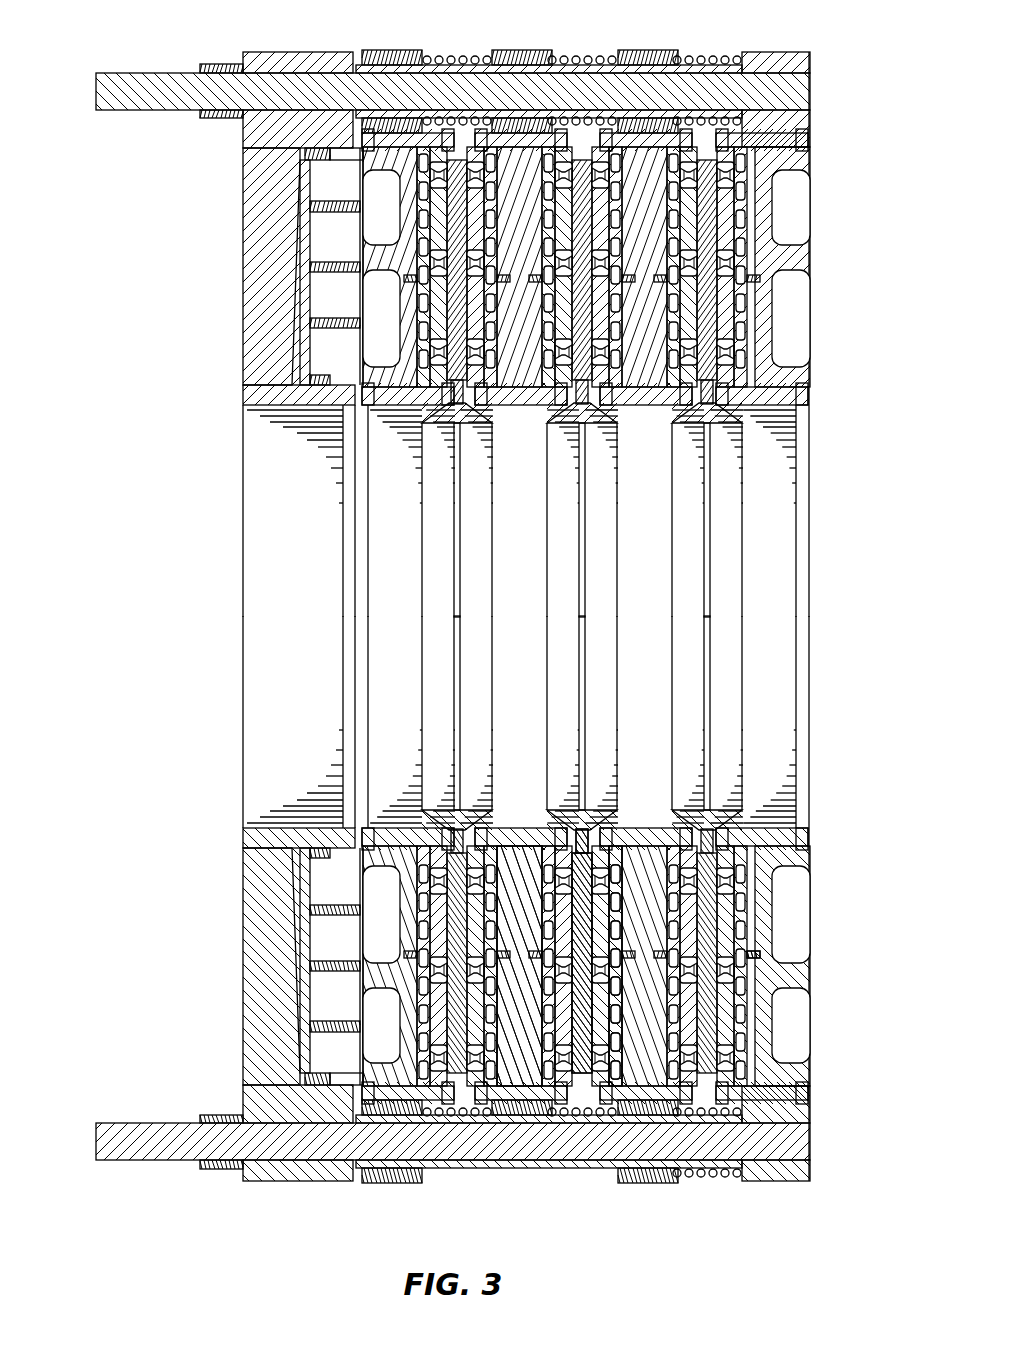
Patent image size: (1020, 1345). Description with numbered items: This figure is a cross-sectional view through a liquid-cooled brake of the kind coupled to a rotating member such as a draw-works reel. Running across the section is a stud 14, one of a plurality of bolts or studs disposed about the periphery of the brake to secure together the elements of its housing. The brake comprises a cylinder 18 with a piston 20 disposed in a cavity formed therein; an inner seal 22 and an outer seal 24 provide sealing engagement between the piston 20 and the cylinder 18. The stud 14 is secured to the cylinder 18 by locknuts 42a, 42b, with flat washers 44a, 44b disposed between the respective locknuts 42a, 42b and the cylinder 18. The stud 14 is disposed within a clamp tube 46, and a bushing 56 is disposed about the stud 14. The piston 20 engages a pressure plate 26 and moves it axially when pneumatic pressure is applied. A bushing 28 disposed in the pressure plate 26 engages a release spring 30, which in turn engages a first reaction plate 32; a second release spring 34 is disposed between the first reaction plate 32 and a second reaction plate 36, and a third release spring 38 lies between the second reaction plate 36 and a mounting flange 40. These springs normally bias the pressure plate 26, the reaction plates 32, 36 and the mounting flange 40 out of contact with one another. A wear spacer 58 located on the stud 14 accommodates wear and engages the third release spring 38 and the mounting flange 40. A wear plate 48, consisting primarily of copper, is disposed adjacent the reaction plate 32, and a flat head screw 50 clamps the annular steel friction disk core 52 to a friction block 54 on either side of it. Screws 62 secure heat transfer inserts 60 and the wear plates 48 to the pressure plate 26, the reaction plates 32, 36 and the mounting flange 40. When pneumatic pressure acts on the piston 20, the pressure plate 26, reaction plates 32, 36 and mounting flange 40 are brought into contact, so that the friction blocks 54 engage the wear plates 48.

The stud 14 is at (97, 93).
The cylinder 18 is at (246, 225).
The piston 20 is at (324, 213).
The inner seal 22 is at (315, 383).
The outer seal 24 is at (323, 150).
The pressure plate 26 is at (388, 50).
The bushing 28 is at (412, 50).
The release spring 30 is at (457, 58).
The first reaction plate 32 is at (521, 50).
The second release spring 34 is at (582, 58).
The second reaction plate 36 is at (646, 50).
The third release spring 38 is at (706, 58).
The mounting flange 40 is at (768, 52).
The locknut 42a is at (232, 1168).
The locknut 42b is at (232, 64).
The flat washer 44a is at (243, 1102).
The flat washer 44b is at (243, 132).
The clamp tube 46 is at (393, 1172).
The wear plate 48 is at (493, 1126).
The flat head screw 50 is at (543, 1085).
The friction disk core 52 is at (582, 1075).
The friction block 54 is at (600, 1065).
The bushing 56 is at (645, 1172).
The wear spacer 58 is at (724, 1166).
The heat transfer insert 60 is at (742, 1075).
The screw 62 is at (762, 957).